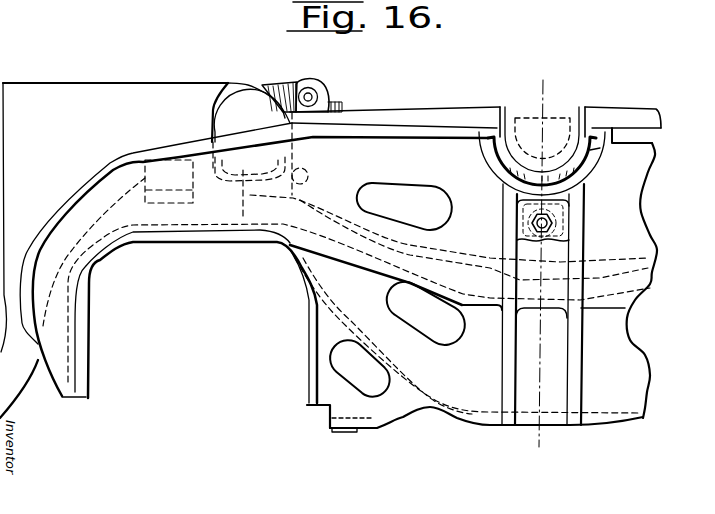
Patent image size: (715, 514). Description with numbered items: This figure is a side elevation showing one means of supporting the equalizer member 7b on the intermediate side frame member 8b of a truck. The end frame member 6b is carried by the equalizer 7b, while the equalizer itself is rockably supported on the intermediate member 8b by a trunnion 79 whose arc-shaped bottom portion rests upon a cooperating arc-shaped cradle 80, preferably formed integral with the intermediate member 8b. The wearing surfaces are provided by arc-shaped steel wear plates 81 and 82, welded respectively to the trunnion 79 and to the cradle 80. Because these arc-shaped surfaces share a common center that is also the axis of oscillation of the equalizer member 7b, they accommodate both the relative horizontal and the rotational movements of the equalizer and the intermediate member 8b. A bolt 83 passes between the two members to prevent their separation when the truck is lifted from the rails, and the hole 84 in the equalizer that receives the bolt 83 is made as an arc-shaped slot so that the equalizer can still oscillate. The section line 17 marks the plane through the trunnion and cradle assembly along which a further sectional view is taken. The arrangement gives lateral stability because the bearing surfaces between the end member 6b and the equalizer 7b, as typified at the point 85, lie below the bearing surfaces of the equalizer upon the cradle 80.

The end frame member 6b is at (70, 94).
The equalizer member 7b is at (453, 117).
The intermediate side frame member 8b is at (390, 157).
The section line 17 is at (552, 452).
The trunnion 79 is at (523, 123).
The arc-shaped cradle 80 is at (492, 157).
The arc-shaped steel wear plate 81 is at (578, 148).
The arc-shaped steel wear plate 82 is at (590, 150).
The bolt 83 is at (553, 225).
The hole 84 is at (587, 205).
The bearing point 85 is at (235, 225).